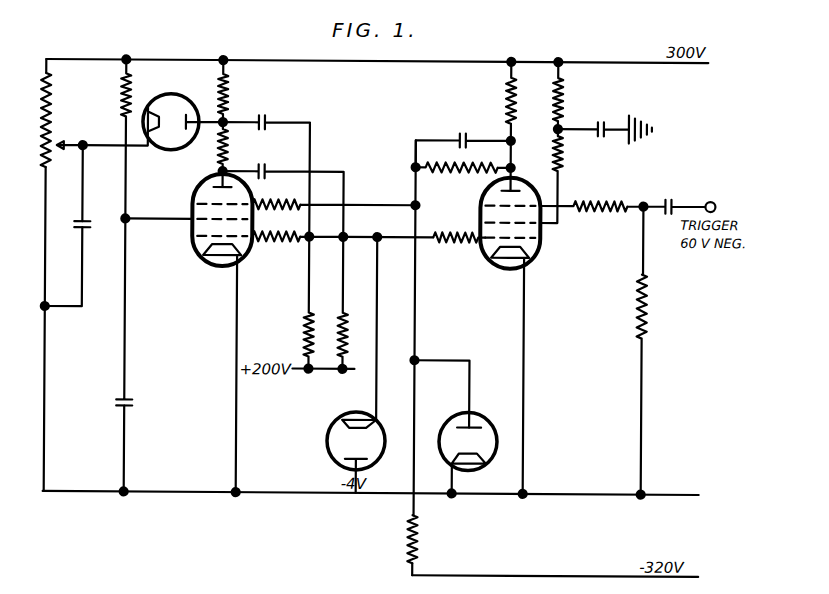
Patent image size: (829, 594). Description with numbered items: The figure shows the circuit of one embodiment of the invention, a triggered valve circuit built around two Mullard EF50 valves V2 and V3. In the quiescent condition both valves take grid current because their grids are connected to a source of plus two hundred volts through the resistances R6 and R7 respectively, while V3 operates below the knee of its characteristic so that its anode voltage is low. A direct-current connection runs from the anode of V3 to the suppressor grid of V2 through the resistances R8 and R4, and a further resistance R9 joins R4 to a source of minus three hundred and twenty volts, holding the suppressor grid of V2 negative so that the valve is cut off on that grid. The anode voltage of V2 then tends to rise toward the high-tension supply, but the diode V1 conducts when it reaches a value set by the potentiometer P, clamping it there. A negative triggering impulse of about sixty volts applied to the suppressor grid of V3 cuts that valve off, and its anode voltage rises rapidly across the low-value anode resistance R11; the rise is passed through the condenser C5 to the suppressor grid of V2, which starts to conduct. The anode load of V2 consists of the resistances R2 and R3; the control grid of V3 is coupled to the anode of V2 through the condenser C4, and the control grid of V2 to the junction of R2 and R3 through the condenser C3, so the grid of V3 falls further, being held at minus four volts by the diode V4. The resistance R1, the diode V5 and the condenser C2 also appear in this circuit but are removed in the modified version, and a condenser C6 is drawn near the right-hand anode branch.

The potentiometer P is at (62, 120).
The resistance R1 is at (138, 138).
The resistance R2 is at (235, 91).
The resistance R3 is at (235, 148).
The resistance R4 is at (333, 195).
The resistance R6 is at (290, 302).
The resistance R7 is at (354, 303).
The resistance R8 is at (463, 177).
The resistance R9 is at (425, 539).
The anode resistance R11 is at (492, 120).
The condenser C2 is at (137, 354).
The condenser C3 is at (266, 169).
The condenser C4 is at (283, 194).
The condenser C5 is at (463, 141).
The capacitor C6 is at (605, 124).
The diode V1 is at (153, 113).
The valve V2 is at (209, 333).
The valve V3 is at (486, 326).
The diode V4 is at (357, 365).
The diode V5 is at (457, 427).